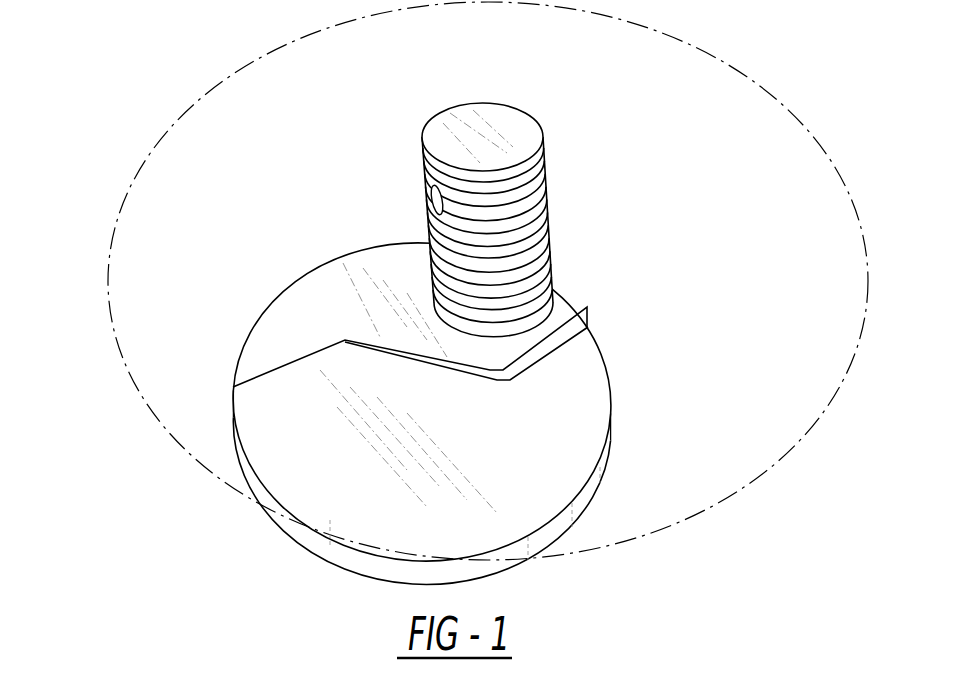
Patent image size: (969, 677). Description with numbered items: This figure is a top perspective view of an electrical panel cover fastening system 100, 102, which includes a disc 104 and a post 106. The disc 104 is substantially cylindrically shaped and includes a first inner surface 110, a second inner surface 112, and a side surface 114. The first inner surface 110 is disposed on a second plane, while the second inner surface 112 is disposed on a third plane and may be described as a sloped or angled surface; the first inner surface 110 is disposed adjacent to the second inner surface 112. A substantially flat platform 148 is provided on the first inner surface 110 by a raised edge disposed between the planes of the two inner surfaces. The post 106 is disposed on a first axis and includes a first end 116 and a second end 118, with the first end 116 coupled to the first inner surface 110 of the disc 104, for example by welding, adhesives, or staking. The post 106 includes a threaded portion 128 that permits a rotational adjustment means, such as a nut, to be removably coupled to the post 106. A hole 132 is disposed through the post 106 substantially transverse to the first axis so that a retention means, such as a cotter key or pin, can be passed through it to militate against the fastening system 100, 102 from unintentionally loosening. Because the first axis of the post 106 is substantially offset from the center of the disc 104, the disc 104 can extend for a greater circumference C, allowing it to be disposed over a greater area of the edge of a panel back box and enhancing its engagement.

The electrical panel cover fastening system 100 is at (438, 310).
The electrical panel cover fastening system 102 is at (438, 310).
The disc 104 is at (438, 396).
The post 106 is at (538, 205).
The first inner surface 110 is at (280, 337).
The second inner surface 112 is at (563, 460).
The side surface 114 is at (348, 562).
The first end 116 is at (553, 313).
The second end 118 is at (520, 127).
The threaded portion 128 is at (552, 233).
The hole 132 is at (425, 196).
The substantially flat platform 148 is at (503, 348).
The circumference C is at (488, 281).